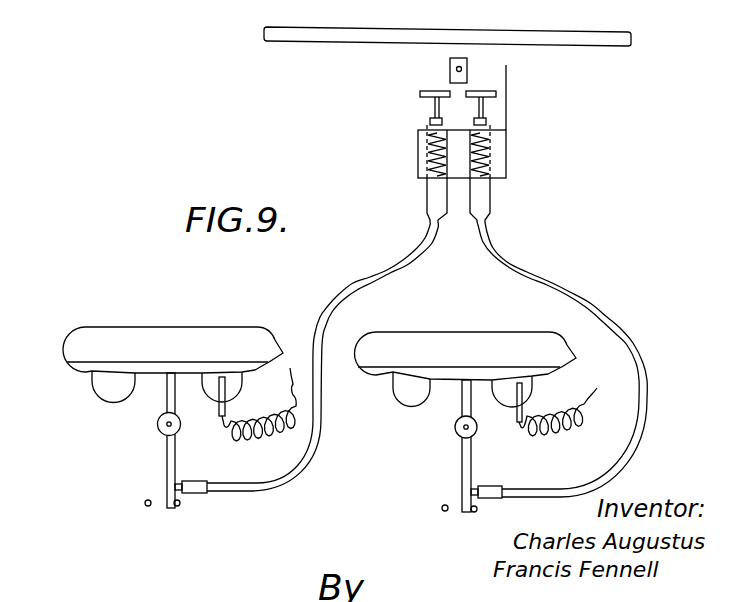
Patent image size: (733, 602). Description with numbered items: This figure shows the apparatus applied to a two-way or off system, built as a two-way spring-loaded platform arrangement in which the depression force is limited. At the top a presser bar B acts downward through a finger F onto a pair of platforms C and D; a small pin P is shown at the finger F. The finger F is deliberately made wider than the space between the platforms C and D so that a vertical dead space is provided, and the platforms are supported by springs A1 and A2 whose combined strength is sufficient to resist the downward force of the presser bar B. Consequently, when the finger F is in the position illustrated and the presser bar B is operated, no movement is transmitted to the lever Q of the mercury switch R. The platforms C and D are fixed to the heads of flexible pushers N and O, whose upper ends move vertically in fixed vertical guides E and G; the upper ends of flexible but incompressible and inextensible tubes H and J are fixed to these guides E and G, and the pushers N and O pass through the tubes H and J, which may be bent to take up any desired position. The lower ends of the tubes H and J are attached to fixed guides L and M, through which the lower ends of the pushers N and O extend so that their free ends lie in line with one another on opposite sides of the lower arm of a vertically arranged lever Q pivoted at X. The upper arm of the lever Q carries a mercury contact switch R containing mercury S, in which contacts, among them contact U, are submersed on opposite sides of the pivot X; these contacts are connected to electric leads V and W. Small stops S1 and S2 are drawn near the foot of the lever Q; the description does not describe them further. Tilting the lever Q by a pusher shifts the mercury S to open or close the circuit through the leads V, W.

The presser bar B is at (580, 38).
The pivot pin P is at (452, 70).
The finger F is at (468, 75).
The platform C is at (423, 92).
The platform D is at (488, 92).
The spring A1 is at (430, 143).
The spring A2 is at (488, 153).
The fixed vertical guide E is at (433, 193).
The fixed vertical guide G is at (480, 197).
The tube H is at (370, 274).
The tube J is at (596, 303).
The mercury contact switch R is at (102, 334).
The mercury S is at (100, 375).
The contact U is at (218, 405).
The electric lead V is at (261, 392).
The electric lead W is at (573, 412).
The pivot X is at (160, 438).
The lever Q is at (165, 476).
The fixed guide L is at (196, 483).
The fixed guide M is at (490, 487).
The flexible pusher N is at (180, 495).
The flexible pusher O is at (474, 500).
The stop S1 is at (145, 507).
The stop S2 is at (177, 509).